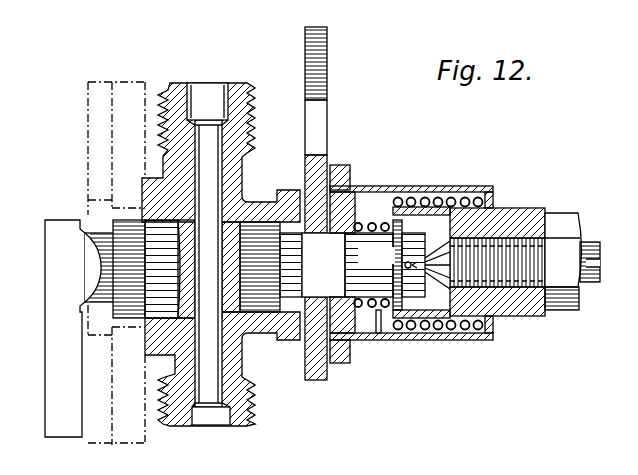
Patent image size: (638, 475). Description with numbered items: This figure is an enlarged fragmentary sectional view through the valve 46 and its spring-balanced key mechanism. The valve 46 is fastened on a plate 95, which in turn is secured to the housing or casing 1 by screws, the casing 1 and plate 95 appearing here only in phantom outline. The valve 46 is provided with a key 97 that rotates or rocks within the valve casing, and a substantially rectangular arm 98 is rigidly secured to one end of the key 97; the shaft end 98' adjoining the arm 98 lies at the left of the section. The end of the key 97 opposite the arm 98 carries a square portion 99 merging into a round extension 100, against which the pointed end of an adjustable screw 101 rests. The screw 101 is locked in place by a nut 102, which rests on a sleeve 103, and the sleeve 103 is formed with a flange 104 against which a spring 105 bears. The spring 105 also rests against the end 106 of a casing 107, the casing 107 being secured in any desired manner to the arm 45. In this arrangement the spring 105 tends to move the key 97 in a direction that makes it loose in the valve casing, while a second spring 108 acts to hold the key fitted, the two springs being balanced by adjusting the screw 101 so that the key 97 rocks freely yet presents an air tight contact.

The casing 1 is at (88, 127).
The plate 95 is at (140, 82).
The valve 46 is at (145, 355).
The arm 45 is at (320, 380).
The key 97 is at (258, 236).
The arm 98 is at (47, 328).
The splined shaft end 98' is at (118, 269).
The square portion 99 is at (323, 265).
The round extension 100 is at (397, 265).
The adjustable screw 101 is at (537, 285).
The nut 102 is at (566, 228).
The sleeve 103 is at (531, 216).
The flange 104 is at (390, 188).
The spring 105 is at (447, 198).
The end of casing 106 is at (493, 206).
The casing 107 is at (448, 340).
The spring 108 is at (378, 312).